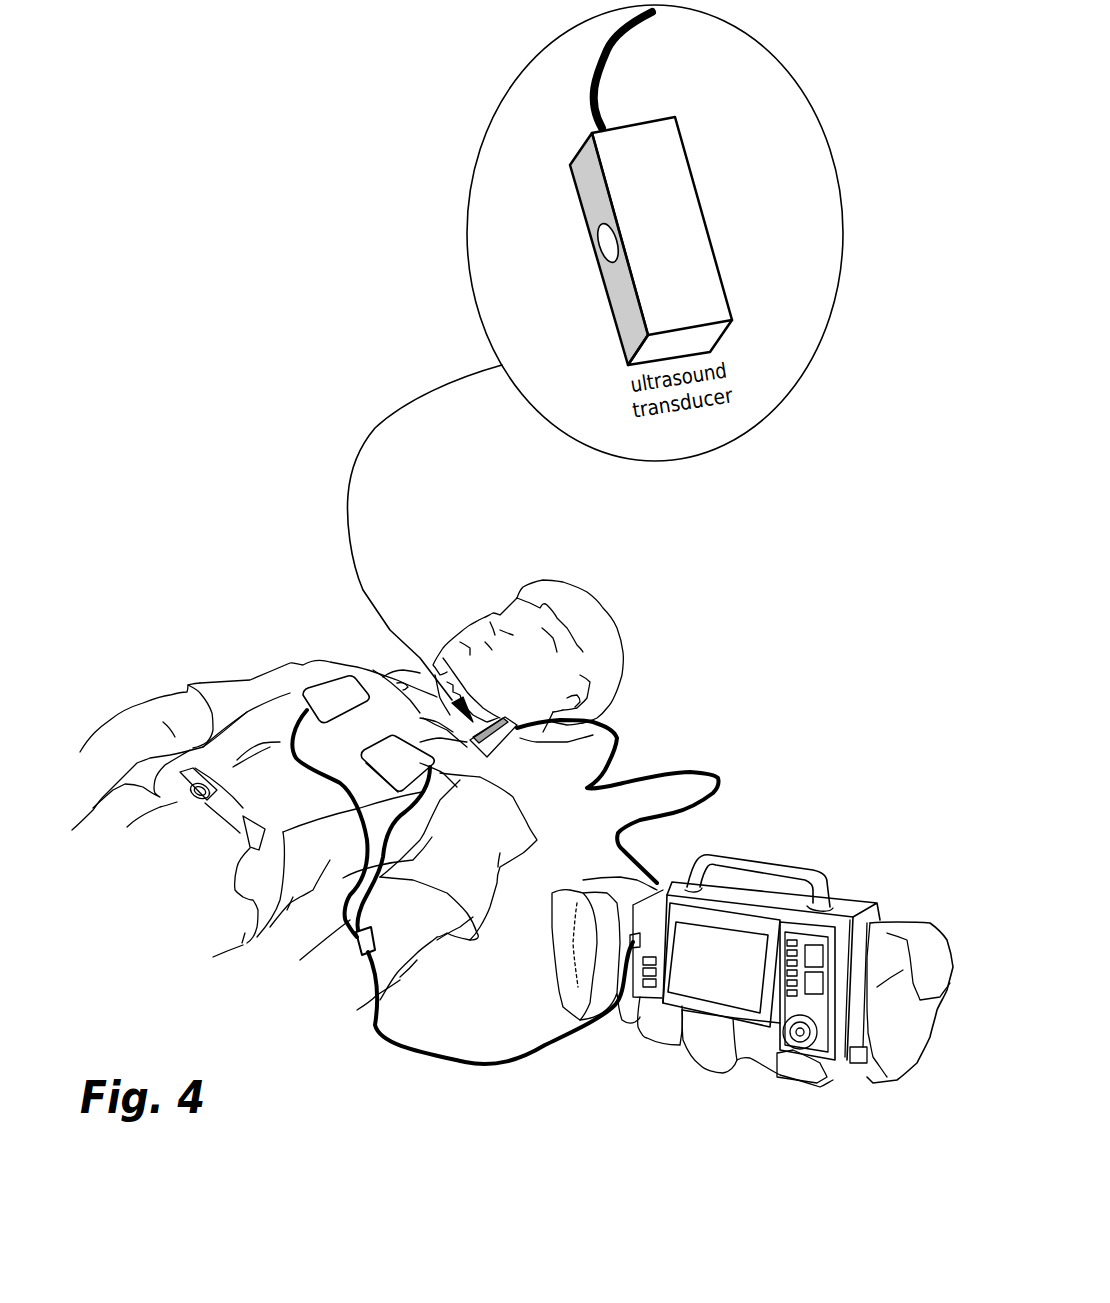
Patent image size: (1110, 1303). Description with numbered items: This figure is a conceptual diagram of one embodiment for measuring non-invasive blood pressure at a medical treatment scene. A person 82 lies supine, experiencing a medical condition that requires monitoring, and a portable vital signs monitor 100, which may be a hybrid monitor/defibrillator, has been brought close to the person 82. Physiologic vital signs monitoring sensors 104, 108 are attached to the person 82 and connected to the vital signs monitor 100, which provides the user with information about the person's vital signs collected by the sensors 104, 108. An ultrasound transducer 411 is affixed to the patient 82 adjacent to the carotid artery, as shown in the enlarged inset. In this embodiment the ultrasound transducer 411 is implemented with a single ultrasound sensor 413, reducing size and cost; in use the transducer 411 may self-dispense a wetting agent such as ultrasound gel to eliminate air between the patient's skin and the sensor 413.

The person 82 is at (155, 617).
The vital signs monitor 100 is at (780, 1077).
The vital signs monitoring sensor 104 is at (318, 670).
The vital signs monitoring sensor 108 is at (532, 830).
The ultrasound transducer 411 is at (702, 198).
The ultrasound sensor 413 is at (572, 252).